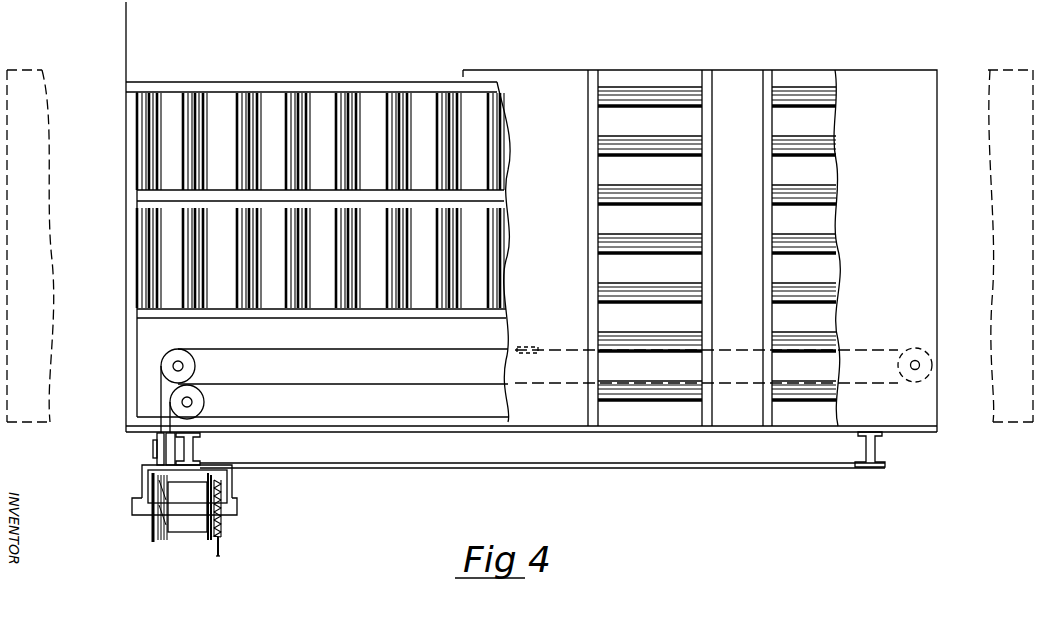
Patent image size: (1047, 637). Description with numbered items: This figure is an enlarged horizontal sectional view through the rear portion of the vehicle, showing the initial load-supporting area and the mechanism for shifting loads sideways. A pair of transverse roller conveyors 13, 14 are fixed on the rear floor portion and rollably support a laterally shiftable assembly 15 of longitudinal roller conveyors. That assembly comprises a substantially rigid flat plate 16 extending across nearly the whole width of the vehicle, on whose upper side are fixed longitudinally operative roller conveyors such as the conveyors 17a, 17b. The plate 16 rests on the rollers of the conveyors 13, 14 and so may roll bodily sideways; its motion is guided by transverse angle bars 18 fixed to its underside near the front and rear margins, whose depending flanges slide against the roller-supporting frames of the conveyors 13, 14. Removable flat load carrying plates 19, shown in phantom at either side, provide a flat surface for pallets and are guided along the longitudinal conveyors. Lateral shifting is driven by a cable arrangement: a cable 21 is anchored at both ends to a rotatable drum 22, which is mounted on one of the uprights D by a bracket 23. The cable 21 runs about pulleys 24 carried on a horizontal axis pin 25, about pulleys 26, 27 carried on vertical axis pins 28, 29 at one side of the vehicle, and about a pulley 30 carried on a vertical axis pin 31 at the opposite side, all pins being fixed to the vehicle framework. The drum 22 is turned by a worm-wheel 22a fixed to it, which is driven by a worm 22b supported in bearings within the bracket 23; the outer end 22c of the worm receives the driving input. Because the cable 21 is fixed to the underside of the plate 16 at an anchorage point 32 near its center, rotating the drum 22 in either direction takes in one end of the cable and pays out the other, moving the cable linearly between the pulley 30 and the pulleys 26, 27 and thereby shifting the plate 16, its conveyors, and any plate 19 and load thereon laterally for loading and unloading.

The transverse roller conveyor 13 is at (168, 137).
The transverse roller conveyor 14 is at (168, 252).
The laterally shiftable assembly 15 is at (586, 99).
The flat plate 16 is at (531, 235).
The longitudinal roller conveyor 17a is at (826, 52).
The longitudinal roller conveyor 17b is at (655, 90).
The angle bar 18 is at (482, 52).
The load carrying plate 19 is at (40, 72).
The cable 21 is at (416, 387).
The rotatable drum 22 is at (190, 530).
The worm-wheel 22a is at (223, 524).
The worm 22b is at (221, 545).
The outer end of the worm 22c is at (218, 558).
The bracket 23 is at (232, 484).
The pulley 24 is at (156, 443).
The horizontal axis pin 25 is at (154, 451).
The pulley 26 is at (196, 364).
The pulley 27 is at (205, 399).
The vertical axis pin 28 is at (184, 369).
The vertical axis pin 29 is at (193, 405).
The pulley 30 is at (933, 361).
The vertical axis pin 31 is at (921, 368).
The anchorage point 32 is at (540, 347).
The upright D is at (200, 450).